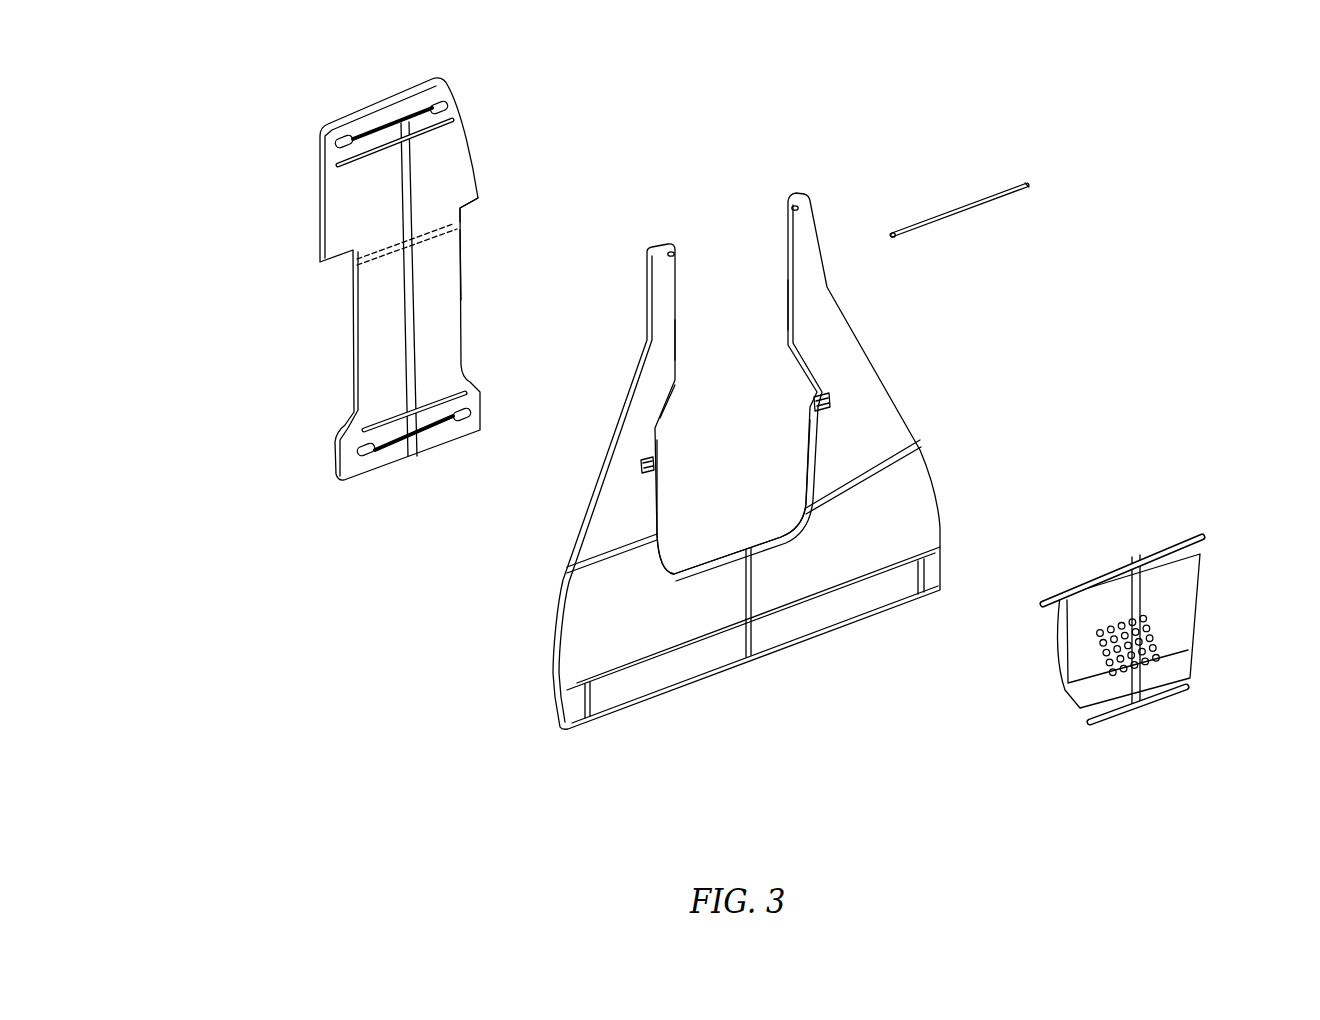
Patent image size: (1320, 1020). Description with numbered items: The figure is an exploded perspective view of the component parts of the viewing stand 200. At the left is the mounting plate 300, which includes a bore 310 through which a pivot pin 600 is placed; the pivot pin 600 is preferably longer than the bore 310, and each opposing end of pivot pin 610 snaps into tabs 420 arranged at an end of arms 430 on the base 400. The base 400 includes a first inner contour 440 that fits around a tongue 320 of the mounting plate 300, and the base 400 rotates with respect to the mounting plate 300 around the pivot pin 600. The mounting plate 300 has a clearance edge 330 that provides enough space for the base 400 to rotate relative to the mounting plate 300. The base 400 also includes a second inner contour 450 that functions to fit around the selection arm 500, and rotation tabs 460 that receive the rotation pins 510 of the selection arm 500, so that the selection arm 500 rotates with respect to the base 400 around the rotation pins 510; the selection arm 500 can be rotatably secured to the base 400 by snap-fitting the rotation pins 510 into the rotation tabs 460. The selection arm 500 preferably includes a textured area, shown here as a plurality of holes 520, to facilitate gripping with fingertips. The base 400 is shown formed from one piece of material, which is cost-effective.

The viewing stand 200 is at (908, 88).
The mounting plate 300 is at (523, 105).
The bore 310 is at (358, 270).
The tongue 320 is at (459, 268).
The clearance edge 330 is at (461, 214).
The base 400 is at (986, 458).
The tabs 420 is at (674, 255).
The arms 430 is at (676, 342).
The first inner contour 440 is at (668, 397).
The second inner contour 450 is at (812, 461).
The rotation tabs 460 is at (814, 404).
The selection arm 500 is at (1010, 720).
The rotation pins 510 is at (1210, 547).
The holes 520 is at (1163, 633).
The pivot pin 600 is at (1047, 162).
The opposing end of pivot pin 610 is at (1027, 188).